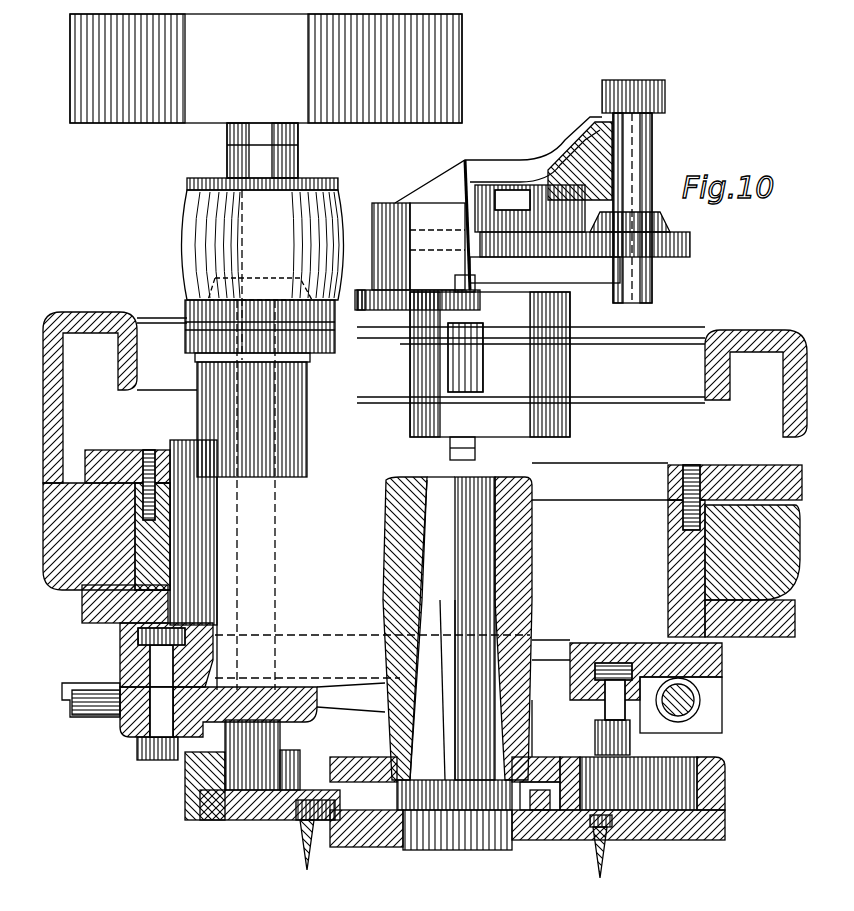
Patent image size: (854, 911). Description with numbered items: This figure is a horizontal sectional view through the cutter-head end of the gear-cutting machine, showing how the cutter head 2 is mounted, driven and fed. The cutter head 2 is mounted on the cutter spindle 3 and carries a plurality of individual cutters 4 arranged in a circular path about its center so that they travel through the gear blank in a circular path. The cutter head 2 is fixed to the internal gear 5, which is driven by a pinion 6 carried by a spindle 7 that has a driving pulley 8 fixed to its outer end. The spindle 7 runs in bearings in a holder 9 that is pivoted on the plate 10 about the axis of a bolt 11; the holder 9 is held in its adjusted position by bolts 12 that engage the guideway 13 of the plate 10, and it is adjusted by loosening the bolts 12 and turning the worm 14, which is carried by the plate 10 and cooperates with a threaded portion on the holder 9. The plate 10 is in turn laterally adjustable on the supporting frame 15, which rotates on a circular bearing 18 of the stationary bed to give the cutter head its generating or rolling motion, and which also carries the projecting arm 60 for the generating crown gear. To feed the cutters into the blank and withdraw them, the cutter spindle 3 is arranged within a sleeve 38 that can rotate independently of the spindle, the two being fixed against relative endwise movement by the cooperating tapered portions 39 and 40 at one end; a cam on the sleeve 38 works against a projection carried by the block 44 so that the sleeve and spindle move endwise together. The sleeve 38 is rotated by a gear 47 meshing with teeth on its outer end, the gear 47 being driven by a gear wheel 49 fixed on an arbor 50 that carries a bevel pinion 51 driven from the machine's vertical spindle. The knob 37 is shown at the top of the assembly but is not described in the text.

The driving pulley 8 is at (266, 68).
The knurled knob 37 is at (222, 283).
The spindle 7 is at (268, 545).
The circular bearing 18 is at (95, 560).
The block 44 is at (470, 360).
The arbor 50 is at (650, 172).
The bevel pinion 51 is at (660, 228).
The gear wheel 49 is at (690, 248).
The gear 47 is at (487, 247).
The sleeve 38 is at (520, 572).
The cutter spindle 3 is at (454, 663).
The tapered portion 39 is at (410, 700).
The tapered portion 40 is at (415, 735).
The supporting frame 15 is at (97, 622).
The plate 10 is at (128, 655).
The bolt 11 is at (145, 743).
The holder 9 is at (155, 715).
The pinion 6 is at (240, 760).
The internal gear 5 is at (210, 805).
The cutters 4 is at (305, 845).
The cutter head 2 is at (545, 845).
The projecting arm 60 is at (760, 637).
The guideway 13 is at (603, 668).
The worm 14 is at (690, 690).
The bolts 12 is at (620, 742).